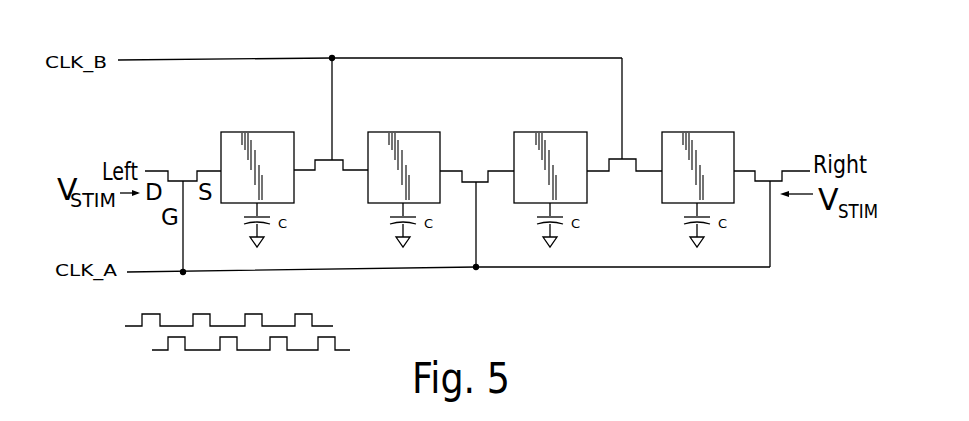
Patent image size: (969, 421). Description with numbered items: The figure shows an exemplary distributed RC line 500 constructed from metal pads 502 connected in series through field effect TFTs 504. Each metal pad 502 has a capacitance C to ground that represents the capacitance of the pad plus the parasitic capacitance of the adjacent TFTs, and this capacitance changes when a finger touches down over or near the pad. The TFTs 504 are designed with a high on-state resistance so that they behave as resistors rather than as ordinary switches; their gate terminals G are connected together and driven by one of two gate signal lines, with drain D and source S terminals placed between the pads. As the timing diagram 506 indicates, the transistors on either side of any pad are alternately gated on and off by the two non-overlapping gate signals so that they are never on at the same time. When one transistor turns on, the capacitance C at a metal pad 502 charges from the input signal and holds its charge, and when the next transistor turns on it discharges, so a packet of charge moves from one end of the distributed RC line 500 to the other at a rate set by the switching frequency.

The distributed RC line 500 is at (730, 70).
The metal pad 502 is at (242, 131).
The field effect TFT 504 is at (183, 174).
The timing diagram 506 is at (161, 369).